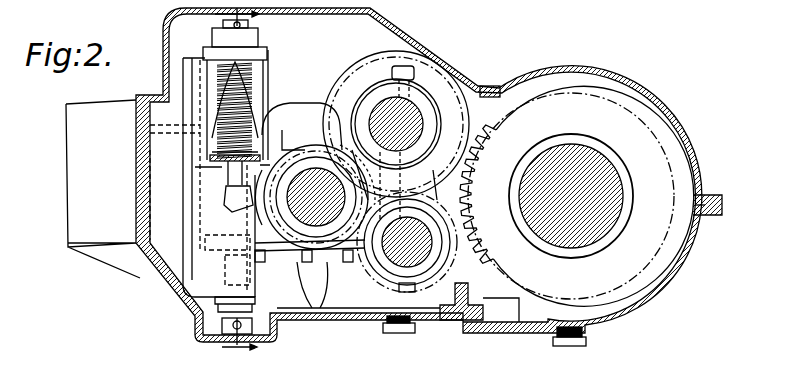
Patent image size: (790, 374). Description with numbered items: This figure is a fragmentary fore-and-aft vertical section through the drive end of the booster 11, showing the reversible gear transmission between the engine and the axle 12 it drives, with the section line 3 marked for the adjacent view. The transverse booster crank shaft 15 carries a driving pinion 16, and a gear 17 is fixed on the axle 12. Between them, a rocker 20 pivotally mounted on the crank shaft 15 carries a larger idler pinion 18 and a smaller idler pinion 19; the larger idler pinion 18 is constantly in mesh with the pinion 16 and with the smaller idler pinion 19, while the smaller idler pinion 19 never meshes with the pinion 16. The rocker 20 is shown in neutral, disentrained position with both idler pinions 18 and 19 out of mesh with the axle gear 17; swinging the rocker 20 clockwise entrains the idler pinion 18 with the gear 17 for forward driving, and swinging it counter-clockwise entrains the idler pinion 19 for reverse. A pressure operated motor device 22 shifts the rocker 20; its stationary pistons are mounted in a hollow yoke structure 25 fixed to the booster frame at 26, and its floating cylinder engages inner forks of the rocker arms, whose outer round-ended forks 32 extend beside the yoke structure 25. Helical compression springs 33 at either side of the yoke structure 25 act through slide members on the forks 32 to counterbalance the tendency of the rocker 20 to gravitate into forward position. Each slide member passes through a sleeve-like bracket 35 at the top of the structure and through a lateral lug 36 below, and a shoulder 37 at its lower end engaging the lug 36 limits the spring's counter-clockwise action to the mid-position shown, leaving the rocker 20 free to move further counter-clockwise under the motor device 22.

The section line 3- 3 is at (228, 187).
The booster 11 is at (341, 322).
The axle 12 is at (583, 235).
The booster crank shaft 15 is at (308, 225).
The pinion 16 is at (318, 107).
The gear 17 is at (556, 97).
The larger idler pinion 18 is at (432, 65).
The smaller idler pinion 19 is at (440, 262).
The rocker 20 is at (350, 130).
The pressure operated motor device 22 is at (188, 258).
The yoke structure 25 is at (278, 130).
The booster frame attachment 26 is at (165, 110).
The outer forks of rocker arms 32 is at (232, 200).
The helical compression springs 33 is at (242, 100).
The sleeve-like bracket 35 is at (258, 48).
The lateral lug 36 is at (222, 167).
The shoulder 37 is at (218, 160).